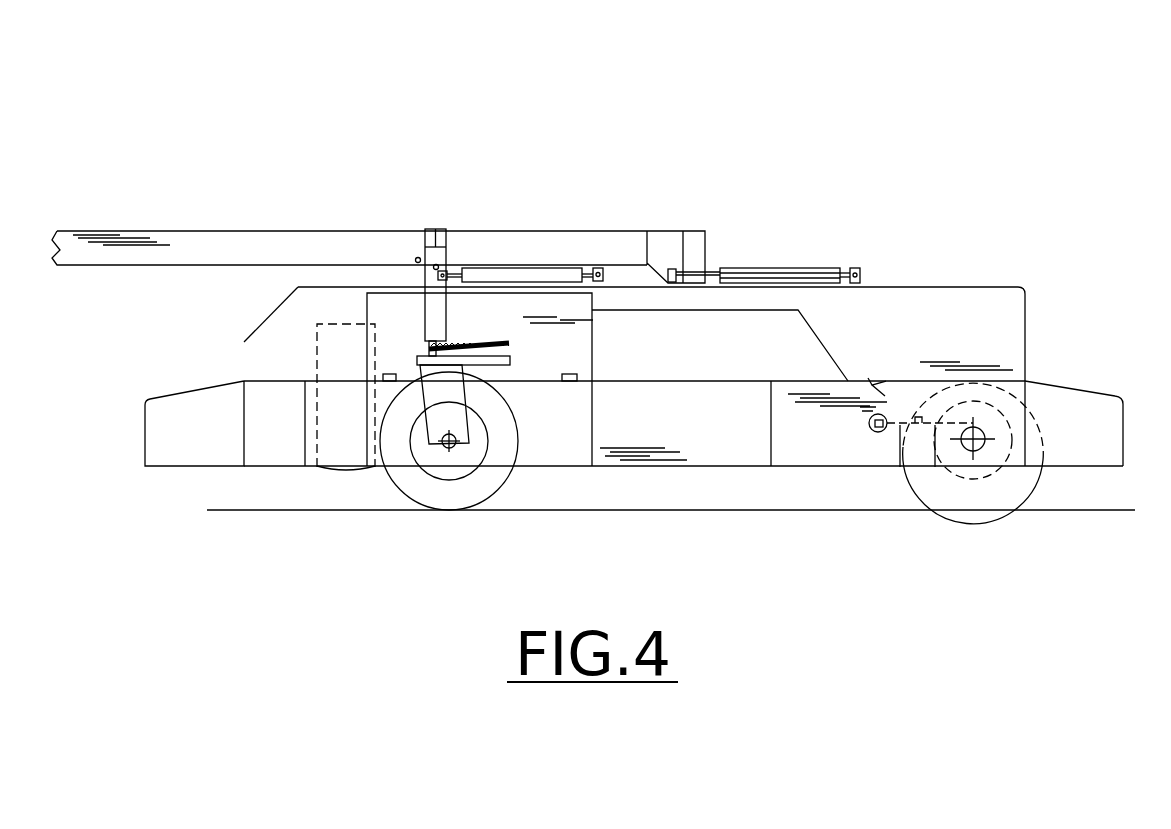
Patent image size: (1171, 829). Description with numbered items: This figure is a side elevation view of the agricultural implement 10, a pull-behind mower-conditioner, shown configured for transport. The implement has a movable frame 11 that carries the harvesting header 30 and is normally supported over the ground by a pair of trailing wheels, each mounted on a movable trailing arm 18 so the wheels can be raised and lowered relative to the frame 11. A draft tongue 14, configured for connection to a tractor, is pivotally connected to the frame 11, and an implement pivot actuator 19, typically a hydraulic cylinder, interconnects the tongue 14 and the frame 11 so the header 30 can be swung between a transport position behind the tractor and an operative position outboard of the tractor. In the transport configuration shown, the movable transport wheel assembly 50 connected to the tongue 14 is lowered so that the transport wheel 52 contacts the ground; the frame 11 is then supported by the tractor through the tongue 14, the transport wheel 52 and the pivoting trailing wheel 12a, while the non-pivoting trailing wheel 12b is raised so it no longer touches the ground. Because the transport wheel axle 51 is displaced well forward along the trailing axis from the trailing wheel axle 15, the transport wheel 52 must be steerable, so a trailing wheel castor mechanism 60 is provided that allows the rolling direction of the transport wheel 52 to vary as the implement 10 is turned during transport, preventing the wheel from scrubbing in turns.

The agricultural implement 10 is at (692, 140).
The movable frame 11 is at (885, 271).
The pivoting trailing wheel 12a is at (995, 498).
The non-pivoting trailing wheel 12b is at (332, 352).
The draft tongue 14 is at (138, 232).
The trailing wheel axle 15 is at (967, 447).
The trailing arm 18 is at (923, 427).
The implement pivot actuator 19 is at (743, 272).
The harvesting header 30 is at (873, 385).
The movable transport wheel assembly 50 is at (458, 210).
The transport wheel axle 51 is at (448, 443).
The transport wheel 52 is at (475, 488).
The trailing wheel castor mechanism 60 is at (474, 335).